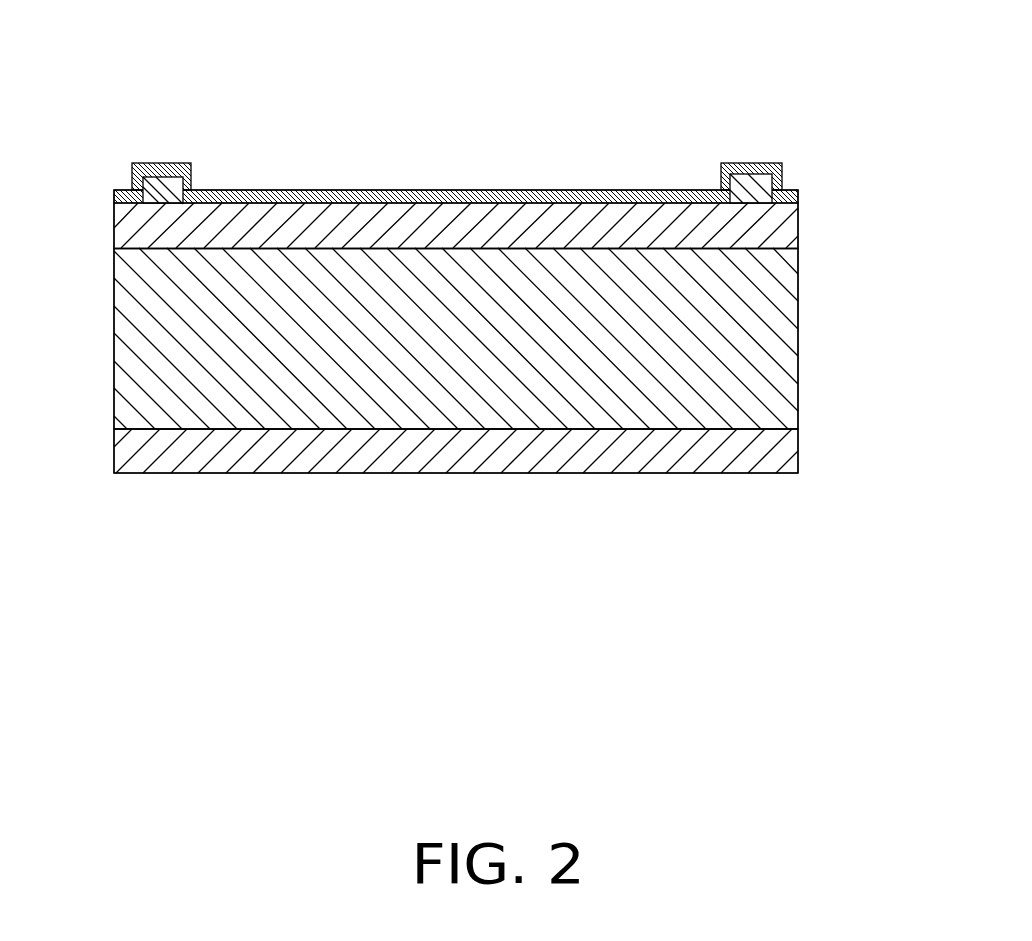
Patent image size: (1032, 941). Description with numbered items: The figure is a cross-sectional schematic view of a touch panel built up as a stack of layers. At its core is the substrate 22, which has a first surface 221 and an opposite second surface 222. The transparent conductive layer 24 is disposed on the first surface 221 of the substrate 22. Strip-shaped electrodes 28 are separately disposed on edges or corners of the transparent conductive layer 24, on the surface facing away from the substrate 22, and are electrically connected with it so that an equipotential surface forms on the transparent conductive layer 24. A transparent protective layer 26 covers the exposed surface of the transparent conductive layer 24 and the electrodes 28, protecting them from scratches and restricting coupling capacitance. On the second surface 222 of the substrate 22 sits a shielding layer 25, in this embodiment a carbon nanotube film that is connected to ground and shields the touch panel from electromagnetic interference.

The substrate 22 is at (732, 358).
The first surface 221 is at (213, 249).
The second surface 222 is at (213, 422).
The transparent conductive layer 24 is at (760, 228).
The shielding layer 25 is at (624, 448).
The transparent protective layer 26 is at (303, 188).
The electrodes 28 is at (155, 163).